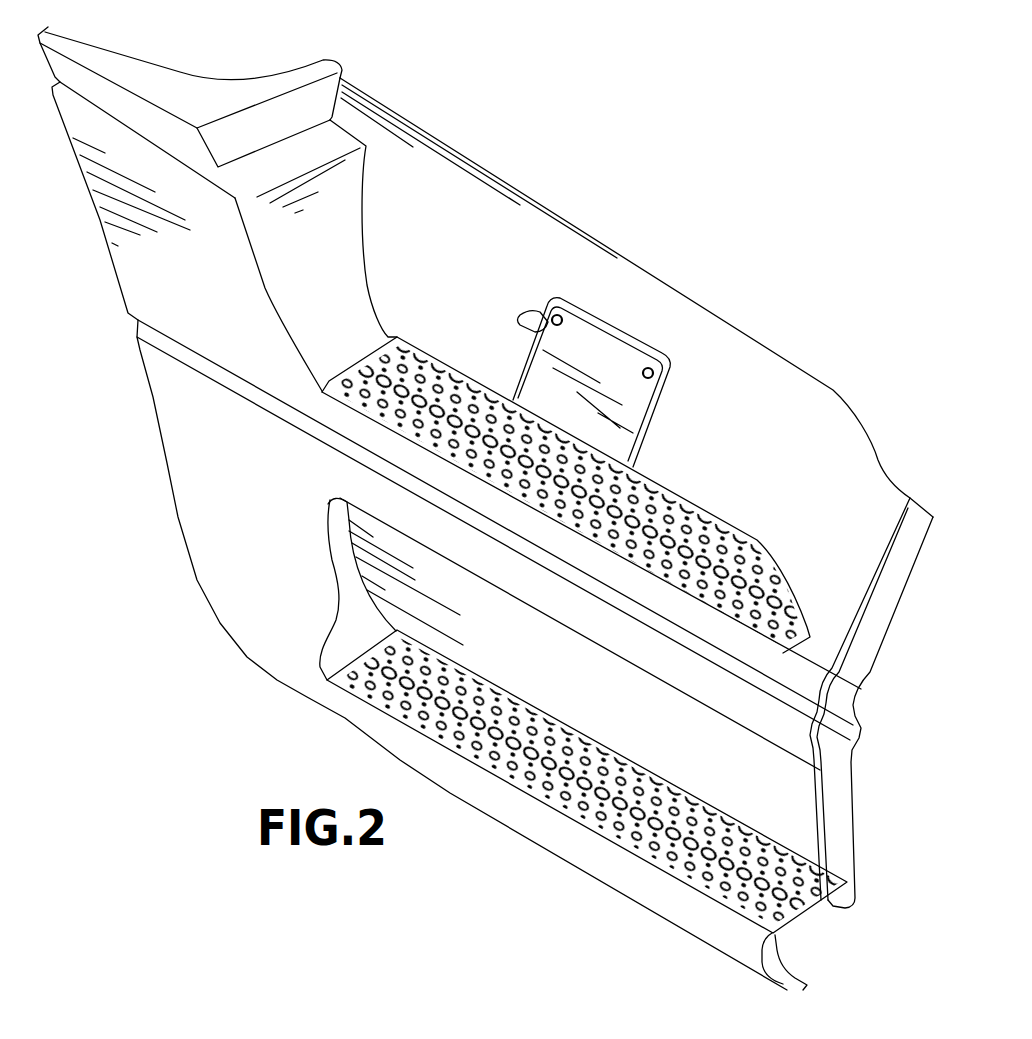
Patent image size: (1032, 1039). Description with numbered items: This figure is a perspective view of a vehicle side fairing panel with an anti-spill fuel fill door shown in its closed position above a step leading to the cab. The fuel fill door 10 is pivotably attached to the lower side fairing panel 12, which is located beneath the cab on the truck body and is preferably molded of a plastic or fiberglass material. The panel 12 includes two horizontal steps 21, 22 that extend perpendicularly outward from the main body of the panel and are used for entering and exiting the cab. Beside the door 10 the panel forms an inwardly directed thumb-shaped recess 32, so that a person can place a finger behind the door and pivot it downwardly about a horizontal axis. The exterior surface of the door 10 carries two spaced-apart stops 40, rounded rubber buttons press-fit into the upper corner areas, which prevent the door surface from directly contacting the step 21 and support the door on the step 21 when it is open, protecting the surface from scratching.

The fuel fill door 10 is at (652, 316).
The lower side fairing panel 12 is at (464, 203).
The step 21 is at (757, 540).
The step 22 is at (520, 797).
The thumb-shaped recess 32 is at (520, 317).
The stops 40 is at (573, 307).